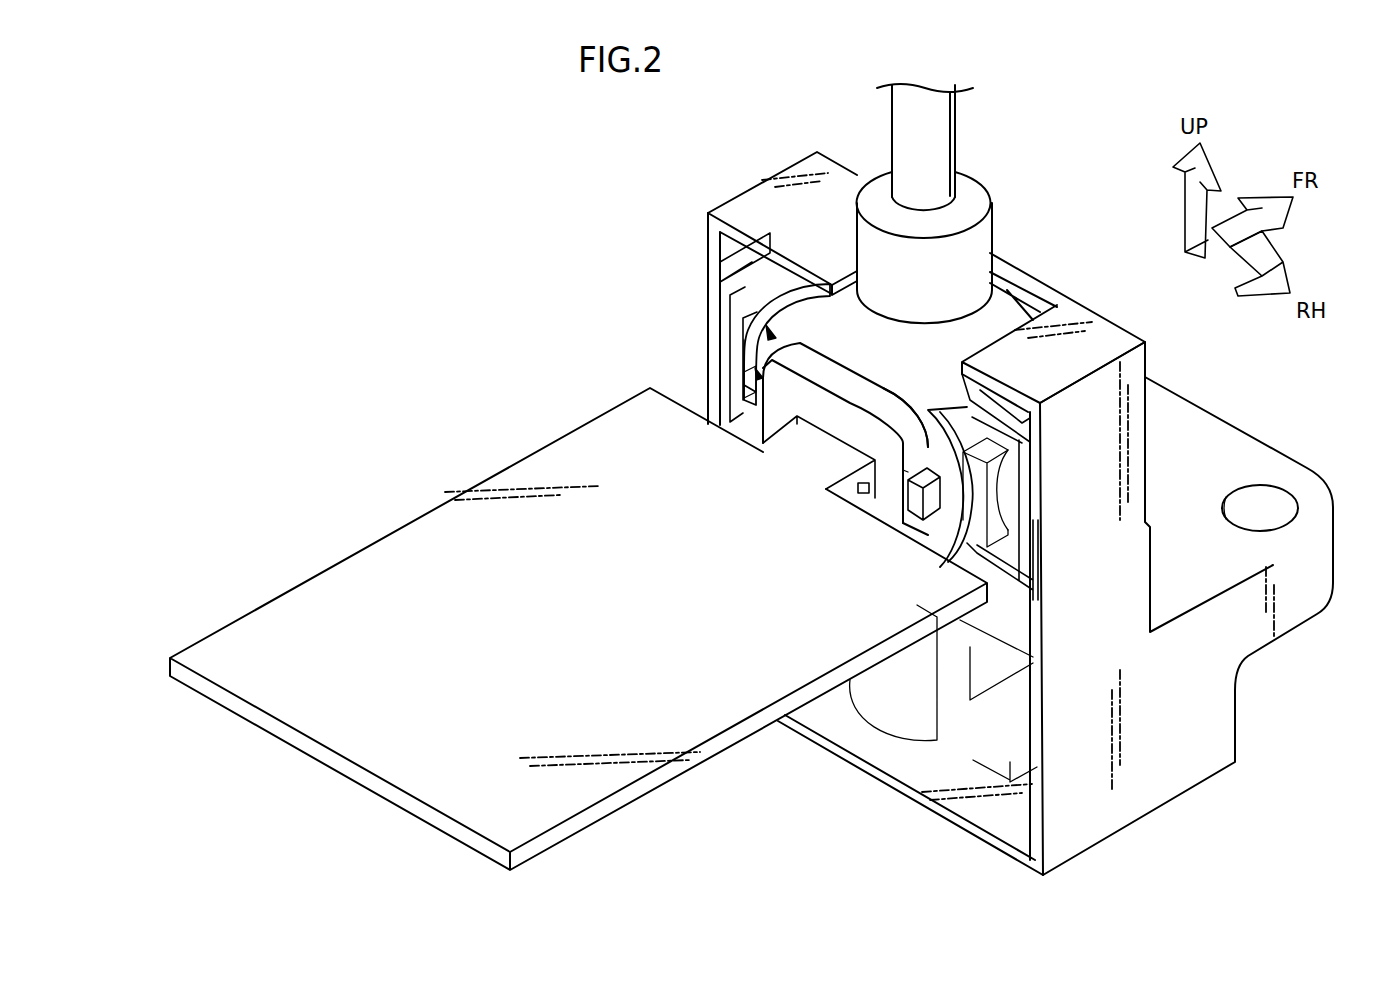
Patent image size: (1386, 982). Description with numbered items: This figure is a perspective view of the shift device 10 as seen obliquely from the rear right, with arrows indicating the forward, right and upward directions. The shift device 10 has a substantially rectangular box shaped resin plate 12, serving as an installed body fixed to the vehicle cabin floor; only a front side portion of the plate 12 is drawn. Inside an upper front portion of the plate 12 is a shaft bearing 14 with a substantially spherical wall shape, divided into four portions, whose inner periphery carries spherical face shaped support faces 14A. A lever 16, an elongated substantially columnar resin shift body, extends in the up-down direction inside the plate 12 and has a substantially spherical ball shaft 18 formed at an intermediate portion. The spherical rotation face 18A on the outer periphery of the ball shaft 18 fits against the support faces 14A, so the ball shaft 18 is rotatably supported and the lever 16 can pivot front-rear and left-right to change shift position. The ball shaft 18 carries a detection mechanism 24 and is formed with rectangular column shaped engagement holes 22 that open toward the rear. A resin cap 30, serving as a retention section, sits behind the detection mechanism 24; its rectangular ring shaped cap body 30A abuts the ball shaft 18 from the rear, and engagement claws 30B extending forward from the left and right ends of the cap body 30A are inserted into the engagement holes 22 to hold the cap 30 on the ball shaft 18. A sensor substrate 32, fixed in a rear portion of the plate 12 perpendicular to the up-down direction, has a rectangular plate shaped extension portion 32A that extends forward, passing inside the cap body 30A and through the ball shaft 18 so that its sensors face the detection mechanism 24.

The shift device 10 is at (412, 305).
The plate 12 is at (776, 172).
The shaft bearing 14 is at (780, 285).
The support faces 14A is at (813, 297).
The lever 16 is at (972, 167).
The ball shaft 18 is at (1007, 303).
The rotation face 18A is at (745, 340).
The engagement holes 22 is at (757, 377).
The detection mechanism 24 is at (773, 318).
The cap 30 is at (810, 362).
The cap body 30A is at (937, 402).
The engagement claws 30B is at (753, 400).
The sensor substrate 32 is at (411, 518).
The extension portion 32A is at (813, 443).